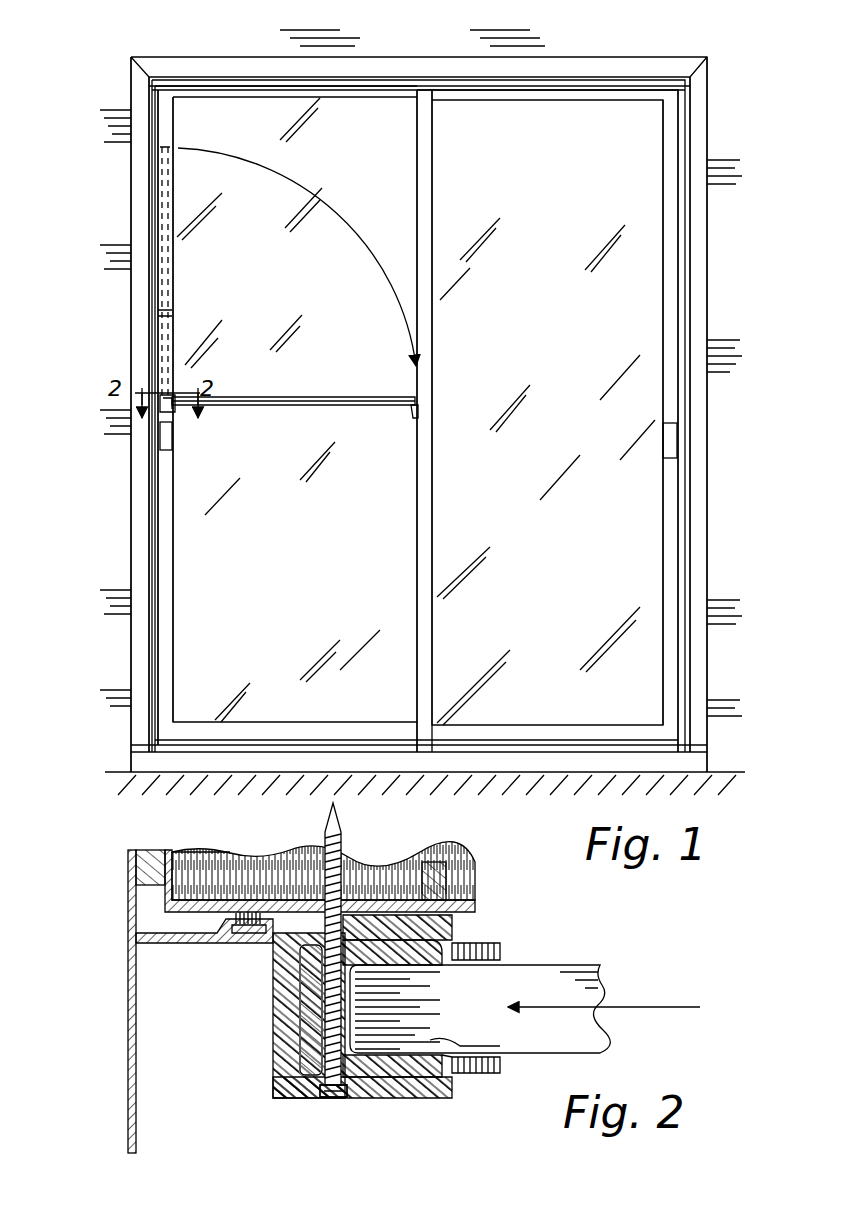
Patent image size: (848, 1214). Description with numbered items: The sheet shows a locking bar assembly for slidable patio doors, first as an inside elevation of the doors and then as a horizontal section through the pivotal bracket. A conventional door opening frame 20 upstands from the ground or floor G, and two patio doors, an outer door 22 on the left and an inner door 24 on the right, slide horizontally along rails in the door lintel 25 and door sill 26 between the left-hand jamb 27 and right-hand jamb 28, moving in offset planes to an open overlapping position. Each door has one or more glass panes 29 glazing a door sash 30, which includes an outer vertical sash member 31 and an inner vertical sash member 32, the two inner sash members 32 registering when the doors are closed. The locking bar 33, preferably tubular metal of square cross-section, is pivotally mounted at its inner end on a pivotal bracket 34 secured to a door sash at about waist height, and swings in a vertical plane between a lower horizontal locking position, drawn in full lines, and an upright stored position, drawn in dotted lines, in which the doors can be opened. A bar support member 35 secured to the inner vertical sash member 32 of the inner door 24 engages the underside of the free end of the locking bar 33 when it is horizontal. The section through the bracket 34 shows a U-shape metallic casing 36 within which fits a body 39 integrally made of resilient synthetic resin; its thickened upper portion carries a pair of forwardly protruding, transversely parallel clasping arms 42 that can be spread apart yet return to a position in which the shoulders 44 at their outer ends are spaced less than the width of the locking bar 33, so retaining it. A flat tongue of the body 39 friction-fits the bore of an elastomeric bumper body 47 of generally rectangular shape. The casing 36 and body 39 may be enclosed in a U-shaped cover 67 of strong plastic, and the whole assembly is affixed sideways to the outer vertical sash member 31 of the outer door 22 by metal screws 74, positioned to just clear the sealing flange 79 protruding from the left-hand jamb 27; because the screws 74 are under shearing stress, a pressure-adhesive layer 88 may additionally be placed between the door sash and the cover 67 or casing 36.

In FIG. 1, the door opening frame 20 is at (707, 282).
In FIG. 1, the door lintel 25 is at (530, 86).
In FIG. 1, the left-hand jamb 27 is at (138, 452).
In FIG. 2, the left-hand jamb 27 is at (128, 905).
In FIG. 1, the right-hand jamb 28 is at (697, 332).
In FIG. 1, the door sill 26 is at (668, 762).
In FIG. 1, the door sash 30 is at (222, 740).
In FIG. 2, the door sash 30 is at (201, 825).
In FIG. 1, the ground or floor G is at (712, 790).
In FIG. 1, the outer door 22 is at (196, 519).
In FIG. 1, the outer vertical sash member 31 is at (170, 572).
In FIG. 2, the outer vertical sash member 31 is at (475, 884).
In FIG. 1, the inner door 24 is at (640, 498).
In FIG. 1, the glass pane 29 is at (650, 572).
In FIG. 1, the inner vertical sash member 32 is at (418, 498).
In FIG. 1, the locking bar 33 is at (318, 405).
In FIG. 2, the locking bar 33 is at (584, 1025).
In FIG. 1, the pivotal bracket 34 is at (178, 412).
In FIG. 2, the pivotal bracket 34 is at (358, 1100).
In FIG. 1, the bar support member 35 is at (412, 414).
In FIG. 2, the metal screws 74 is at (342, 836).
In FIG. 2, the pressure-adhesive layer 88 is at (432, 870).
In FIG. 2, the U-shaped cover 67 is at (440, 925).
In FIG. 2, the U-shape metallic casing 36 is at (448, 940).
In FIG. 2, the sealing flange 79 is at (190, 945).
In FIG. 2, the body 39 is at (313, 992).
In FIG. 2, the shoulders 44 is at (440, 1055).
In FIG. 2, the bumper body 47 is at (474, 1075).
In FIG. 2, the clasping arms 42 is at (396, 1060).